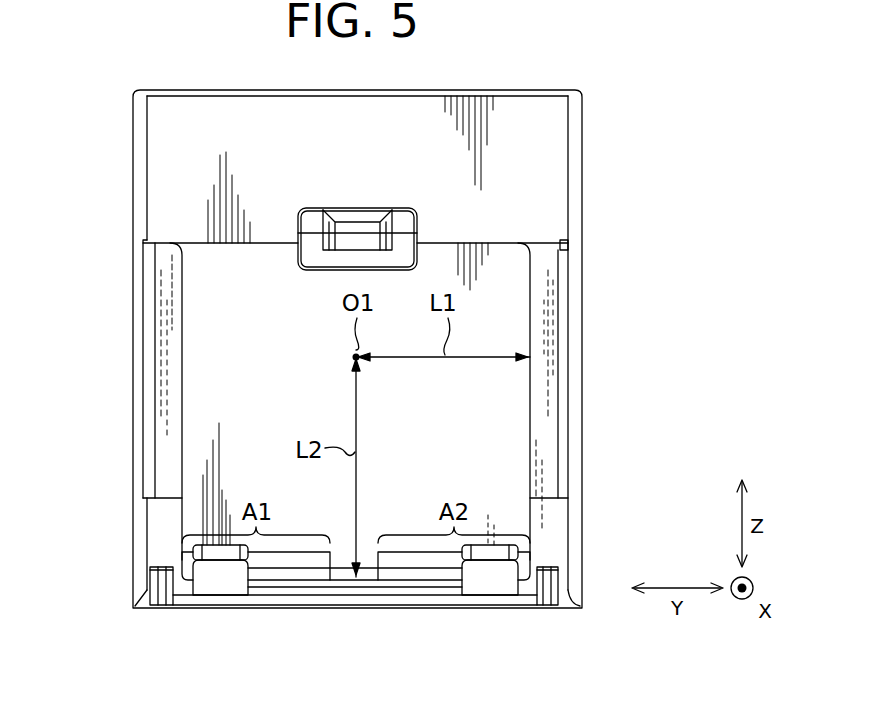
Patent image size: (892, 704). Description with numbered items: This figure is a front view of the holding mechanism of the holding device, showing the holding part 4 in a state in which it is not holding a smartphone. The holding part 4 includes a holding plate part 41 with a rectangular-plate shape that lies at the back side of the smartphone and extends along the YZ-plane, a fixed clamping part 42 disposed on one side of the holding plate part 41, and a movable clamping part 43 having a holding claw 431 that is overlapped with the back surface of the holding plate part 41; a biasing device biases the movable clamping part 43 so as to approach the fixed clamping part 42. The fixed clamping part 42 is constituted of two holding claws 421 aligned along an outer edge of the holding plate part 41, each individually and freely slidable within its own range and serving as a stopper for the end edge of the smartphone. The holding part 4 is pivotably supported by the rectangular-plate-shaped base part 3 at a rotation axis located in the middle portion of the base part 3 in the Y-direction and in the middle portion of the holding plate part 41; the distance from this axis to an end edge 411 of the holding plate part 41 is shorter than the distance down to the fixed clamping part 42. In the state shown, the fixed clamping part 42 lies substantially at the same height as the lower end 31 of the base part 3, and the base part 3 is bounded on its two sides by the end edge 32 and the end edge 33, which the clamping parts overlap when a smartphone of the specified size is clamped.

The base part 3 is at (545, 118).
The holding part 4 is at (200, 260).
The lower end of the base part 31 is at (526, 610).
The end edge of the base part 32 is at (133, 300).
The end edge of the base part 33 is at (582, 228).
The holding plate part 41 is at (540, 395).
The end edge of the holding plate part 411 is at (540, 296).
The fixed clamping part 42 is at (280, 654).
The holding claw 421 is at (228, 594).
The movable clamping part 43 is at (320, 262).
The holding claw 431 is at (366, 246).